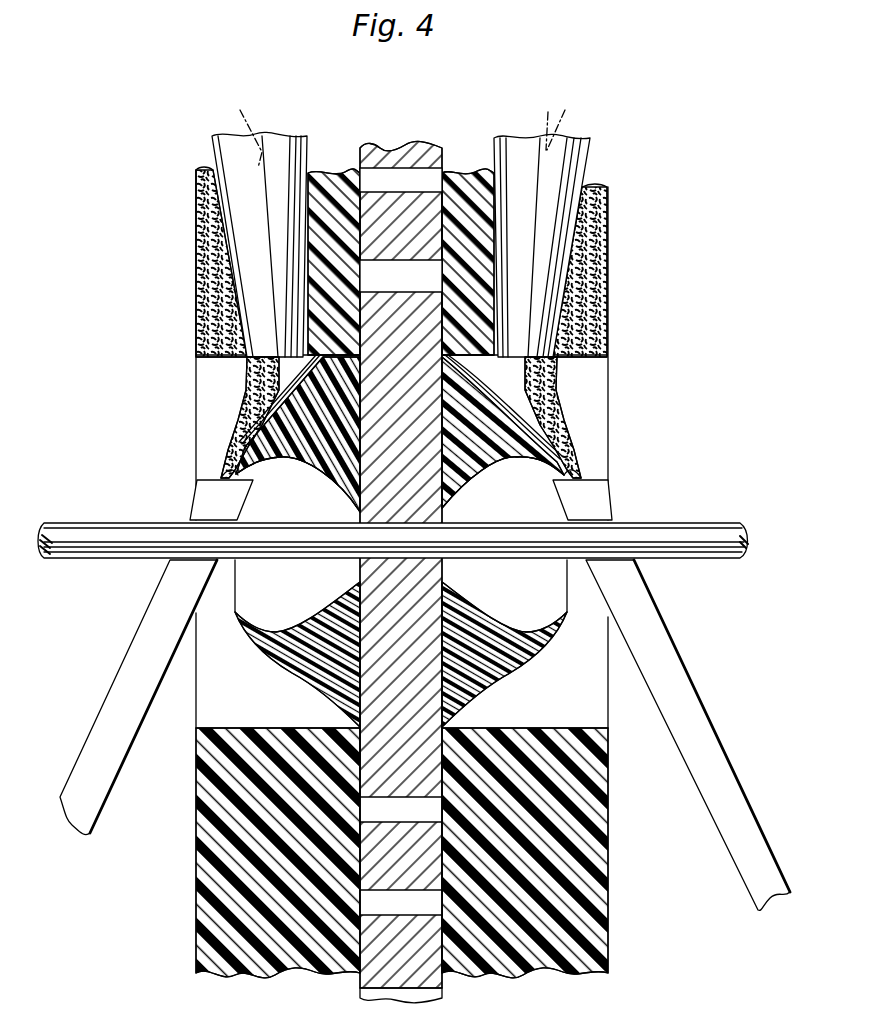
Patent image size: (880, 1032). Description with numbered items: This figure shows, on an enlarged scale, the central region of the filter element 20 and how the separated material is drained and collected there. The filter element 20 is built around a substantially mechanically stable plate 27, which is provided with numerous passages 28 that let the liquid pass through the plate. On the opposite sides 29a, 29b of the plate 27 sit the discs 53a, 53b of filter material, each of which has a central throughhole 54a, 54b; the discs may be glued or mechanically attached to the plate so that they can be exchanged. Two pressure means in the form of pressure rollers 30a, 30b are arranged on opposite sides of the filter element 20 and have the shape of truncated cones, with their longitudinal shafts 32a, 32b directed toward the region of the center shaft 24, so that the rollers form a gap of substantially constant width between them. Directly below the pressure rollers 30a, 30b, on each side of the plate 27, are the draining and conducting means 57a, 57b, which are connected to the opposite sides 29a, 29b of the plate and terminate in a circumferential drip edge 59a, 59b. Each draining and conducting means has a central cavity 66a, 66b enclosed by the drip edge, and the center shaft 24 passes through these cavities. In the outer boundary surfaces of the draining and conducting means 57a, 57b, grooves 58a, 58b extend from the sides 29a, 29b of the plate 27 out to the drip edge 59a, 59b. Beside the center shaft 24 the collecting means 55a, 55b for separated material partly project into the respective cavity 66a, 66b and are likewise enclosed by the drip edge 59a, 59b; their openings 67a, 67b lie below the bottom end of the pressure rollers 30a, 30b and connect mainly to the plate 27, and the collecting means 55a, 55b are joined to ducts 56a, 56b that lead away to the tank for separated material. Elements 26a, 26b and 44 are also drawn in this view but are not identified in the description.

The filter element 20 is at (622, 248).
The center shaft 24 is at (660, 533).
The left tube 26a is at (250, 172).
The right tube 26b is at (502, 172).
The plate 27 is at (413, 970).
The passages 28 is at (379, 282).
The side of the plate 29a is at (347, 170).
The side of the plate 29b is at (452, 173).
The pressure roller 30a is at (253, 262).
The pressure roller 30b is at (550, 282).
The longitudinal shaft of pressure roller 32a is at (229, 133).
The longitudinal shaft of pressure roller 32b is at (576, 124).
The seal strip 44 is at (247, 385).
The disc of filter material 53a is at (195, 190).
The disc of filter material 53b is at (604, 187).
The central throughhole 54a is at (222, 672).
The central throughhole 54b is at (590, 685).
The collecting means 55a is at (213, 500).
The collecting means 55b is at (597, 503).
The duct 56a is at (137, 668).
The duct 56b is at (663, 648).
The draining and conducting means 57a is at (258, 418).
The draining and conducting means 57b is at (563, 415).
The grooves 58a is at (240, 450).
The grooves 58b is at (567, 453).
The circumferential drip edge 59a is at (245, 473).
The circumferential drip edge 59b is at (555, 472).
The central cavity 66a is at (250, 583).
The central cavity 66b is at (560, 585).
The opening of collecting means 67a is at (227, 473).
The opening of collecting means 67b is at (590, 477).